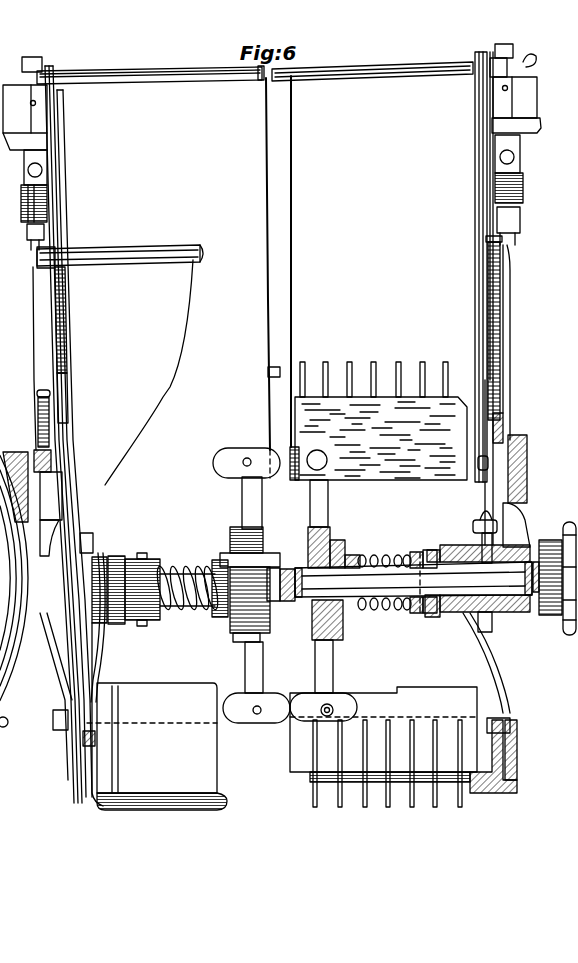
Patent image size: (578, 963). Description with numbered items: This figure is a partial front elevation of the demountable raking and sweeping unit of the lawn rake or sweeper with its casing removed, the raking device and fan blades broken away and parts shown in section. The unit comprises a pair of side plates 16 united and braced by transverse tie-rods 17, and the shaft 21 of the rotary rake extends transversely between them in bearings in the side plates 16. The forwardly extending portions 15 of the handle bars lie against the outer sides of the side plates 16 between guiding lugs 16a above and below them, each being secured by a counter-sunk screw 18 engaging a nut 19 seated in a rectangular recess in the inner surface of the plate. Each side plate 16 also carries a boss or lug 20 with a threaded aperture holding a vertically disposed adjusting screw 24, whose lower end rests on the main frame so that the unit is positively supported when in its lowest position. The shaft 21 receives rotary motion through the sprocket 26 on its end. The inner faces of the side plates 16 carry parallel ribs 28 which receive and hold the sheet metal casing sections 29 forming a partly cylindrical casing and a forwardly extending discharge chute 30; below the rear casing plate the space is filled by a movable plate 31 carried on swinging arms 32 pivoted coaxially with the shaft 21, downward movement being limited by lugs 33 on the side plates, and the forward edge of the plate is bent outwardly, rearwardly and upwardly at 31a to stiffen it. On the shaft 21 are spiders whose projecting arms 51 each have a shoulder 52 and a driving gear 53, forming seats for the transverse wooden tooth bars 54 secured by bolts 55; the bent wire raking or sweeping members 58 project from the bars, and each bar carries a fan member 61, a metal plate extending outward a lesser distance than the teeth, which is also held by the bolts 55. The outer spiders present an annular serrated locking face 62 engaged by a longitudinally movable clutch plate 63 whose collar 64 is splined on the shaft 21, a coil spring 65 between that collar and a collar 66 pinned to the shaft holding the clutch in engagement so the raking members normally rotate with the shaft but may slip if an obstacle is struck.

The forwardly extending portions of the handle bars 15 is at (12, 460).
The side plates 16 is at (52, 122).
The guiding lugs 16a is at (52, 517).
The transverse tie-rods 17 is at (273, 366).
The counter-sunk screw 18 is at (480, 480).
The nut 19 is at (483, 458).
The boss or lug 20 is at (48, 462).
The shaft 21 is at (523, 570).
The adjusting screw 24 is at (40, 394).
The sprocket 26 is at (563, 623).
The parallel ribs 28 is at (66, 356).
The casing sections 29 is at (12, 672).
The discharge chute 30 is at (164, 280).
The movable plate 31 is at (205, 765).
The bent forward edge of the movable plate 31a is at (227, 801).
The swinging arm 32 is at (99, 658).
The lugs 33 is at (85, 741).
The projecting arms 51 is at (243, 495).
The shoulder 52 is at (243, 478).
The driving gear 53 is at (247, 455).
The tooth bars 54 is at (288, 452).
The bolts 55 is at (322, 456).
The wire raking or sweeping members 58 is at (326, 360).
The fan member 61 is at (447, 412).
The annular locking face 62 is at (360, 506).
The clutch plate 63 is at (242, 630).
The collar 64 is at (215, 606).
The coil spring 65 is at (180, 576).
The collar pinned to the shaft 66 is at (137, 573).